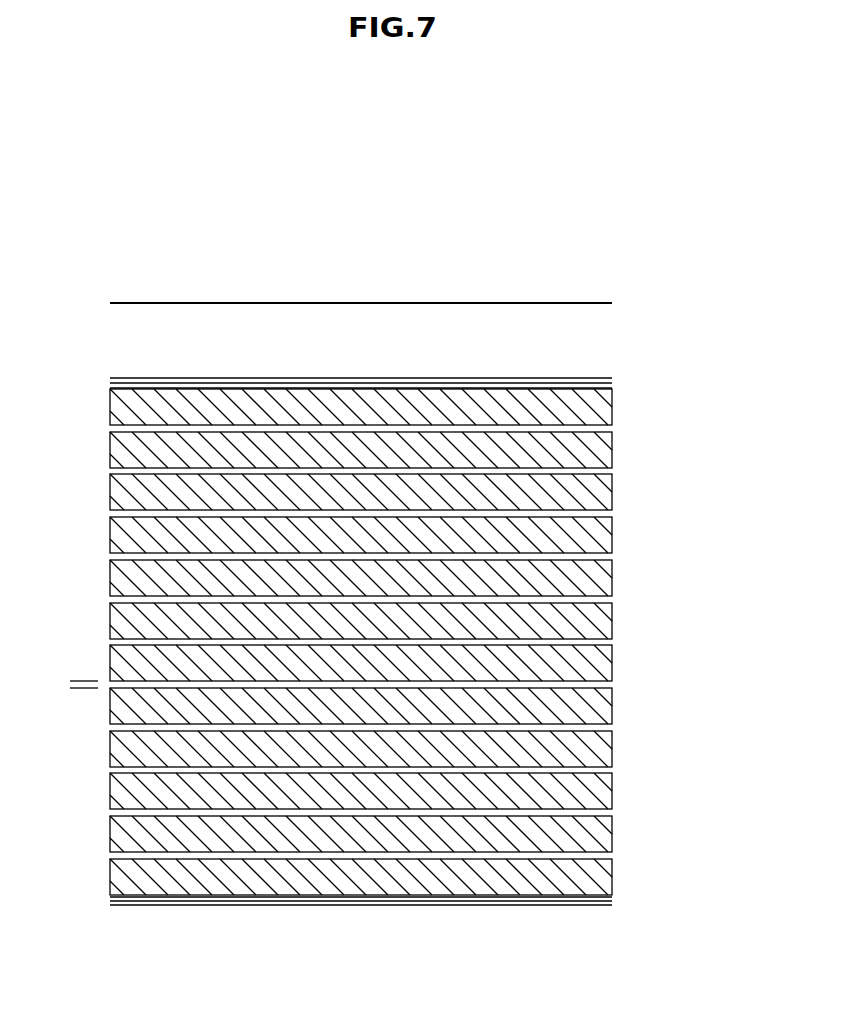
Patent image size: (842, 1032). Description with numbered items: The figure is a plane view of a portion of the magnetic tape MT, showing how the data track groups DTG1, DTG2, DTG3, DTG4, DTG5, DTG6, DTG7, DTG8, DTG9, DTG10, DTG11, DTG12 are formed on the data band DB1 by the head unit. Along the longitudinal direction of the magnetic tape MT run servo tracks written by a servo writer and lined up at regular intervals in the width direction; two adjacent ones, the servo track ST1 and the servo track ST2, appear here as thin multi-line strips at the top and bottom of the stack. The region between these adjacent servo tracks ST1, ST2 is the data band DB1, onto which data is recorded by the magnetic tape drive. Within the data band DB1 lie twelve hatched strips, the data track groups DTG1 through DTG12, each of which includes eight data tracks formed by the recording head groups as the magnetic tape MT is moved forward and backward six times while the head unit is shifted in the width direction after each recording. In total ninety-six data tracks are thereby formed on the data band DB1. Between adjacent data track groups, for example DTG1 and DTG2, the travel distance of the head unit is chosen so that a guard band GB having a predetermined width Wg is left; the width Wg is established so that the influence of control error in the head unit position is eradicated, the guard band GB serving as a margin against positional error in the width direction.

The magnetic tape MT is at (492, 284).
The servo track ST1 is at (331, 384).
The servo track ST2 is at (331, 911).
The data track group DTG1 is at (596, 411).
The data track group DTG2 is at (596, 454).
The data track group DTG3 is at (596, 496).
The data track group DTG4 is at (596, 538).
The data track group DTG5 is at (596, 581).
The data track group DTG6 is at (596, 624).
The data track group DTG7 is at (596, 666).
The data track group DTG8 is at (596, 708).
The data track group DTG9 is at (596, 751).
The data track group DTG10 is at (596, 794).
The data track group DTG11 is at (596, 836).
The data track group DTG12 is at (417, 877).
The data band DB1 is at (456, 642).
The guard band GB is at (110, 428).
The width of the guard band Wg is at (80, 640).